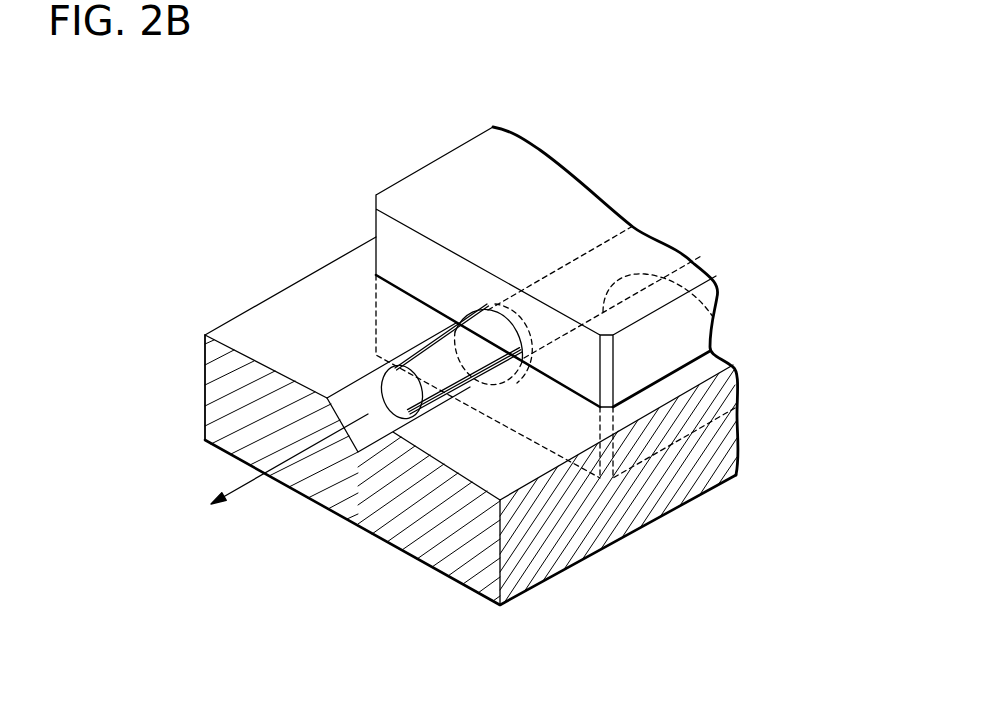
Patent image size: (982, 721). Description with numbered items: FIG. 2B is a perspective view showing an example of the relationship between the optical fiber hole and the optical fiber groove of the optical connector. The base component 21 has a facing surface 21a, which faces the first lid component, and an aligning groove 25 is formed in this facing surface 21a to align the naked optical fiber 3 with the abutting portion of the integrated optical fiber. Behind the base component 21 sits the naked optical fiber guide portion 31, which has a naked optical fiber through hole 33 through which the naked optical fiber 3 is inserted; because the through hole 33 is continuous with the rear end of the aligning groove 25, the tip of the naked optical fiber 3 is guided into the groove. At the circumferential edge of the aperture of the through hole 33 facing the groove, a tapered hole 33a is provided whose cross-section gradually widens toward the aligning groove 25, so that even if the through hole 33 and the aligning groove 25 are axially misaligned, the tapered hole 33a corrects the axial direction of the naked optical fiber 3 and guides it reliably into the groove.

The naked optical fiber 3 is at (423, 363).
The base component 21 is at (560, 552).
The facing surface 21a is at (247, 325).
The aligning groove 25 is at (362, 437).
The naked optical fiber guide portion 31 is at (455, 180).
The naked optical fiber through hole 33 is at (713, 317).
The tapered hole 33a is at (470, 307).